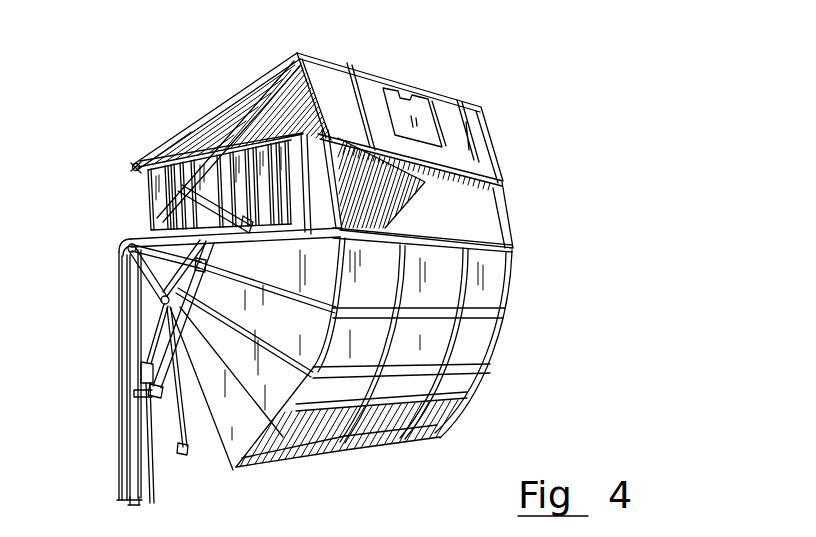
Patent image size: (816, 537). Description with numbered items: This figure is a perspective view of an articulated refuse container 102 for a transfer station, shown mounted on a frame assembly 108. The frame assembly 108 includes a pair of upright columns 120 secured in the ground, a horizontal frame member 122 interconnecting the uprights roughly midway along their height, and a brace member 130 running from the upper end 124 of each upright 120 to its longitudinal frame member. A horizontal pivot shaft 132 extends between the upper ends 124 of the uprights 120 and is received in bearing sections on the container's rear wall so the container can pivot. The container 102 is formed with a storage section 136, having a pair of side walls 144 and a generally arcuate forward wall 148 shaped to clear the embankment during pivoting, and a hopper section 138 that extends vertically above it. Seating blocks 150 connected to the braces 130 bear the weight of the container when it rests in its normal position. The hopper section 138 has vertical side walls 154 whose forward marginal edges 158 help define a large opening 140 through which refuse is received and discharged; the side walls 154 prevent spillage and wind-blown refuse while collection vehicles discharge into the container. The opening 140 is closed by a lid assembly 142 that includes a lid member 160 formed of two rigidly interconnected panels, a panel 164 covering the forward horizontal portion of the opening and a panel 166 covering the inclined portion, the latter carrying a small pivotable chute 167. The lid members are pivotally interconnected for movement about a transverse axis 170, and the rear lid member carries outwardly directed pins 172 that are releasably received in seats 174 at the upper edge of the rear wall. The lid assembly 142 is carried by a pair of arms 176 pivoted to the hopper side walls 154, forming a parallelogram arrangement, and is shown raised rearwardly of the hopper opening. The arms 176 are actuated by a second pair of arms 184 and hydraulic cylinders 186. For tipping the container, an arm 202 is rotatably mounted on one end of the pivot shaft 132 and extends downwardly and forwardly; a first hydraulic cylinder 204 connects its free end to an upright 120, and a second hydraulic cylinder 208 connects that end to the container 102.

The container 102 is at (556, 59).
The frame assembly 108 is at (115, 434).
The upright column 120 is at (137, 362).
The horizontal frame member 122 is at (130, 478).
The upper end of upright 124 is at (133, 263).
The brace member 130 is at (140, 400).
The pivot shaft 132 is at (113, 240).
The storage section 136 is at (503, 352).
The hopper section 138 is at (510, 228).
The opening 140 is at (486, 203).
The lid assembly 142 is at (490, 126).
The side wall 144 is at (237, 470).
The forward wall 148 is at (397, 415).
The seating block 150 is at (153, 463).
The hopper side wall 154 is at (305, 223).
The forward marginal edge 158 is at (330, 158).
The lid member 160 is at (348, 58).
The panel 164 is at (270, 54).
The panel 166 is at (455, 107).
The pivotable chute 167 is at (420, 105).
The transverse axis 170 is at (237, 78).
The pin 172 is at (135, 170).
The seat 174 is at (135, 170).
The arm 176 is at (263, 77).
The arm 184 is at (200, 110).
The hydraulic cylinder 186 is at (175, 202).
The arm 202 is at (133, 292).
The first hydraulic cylinder 204 is at (137, 323).
The second hydraulic cylinder 208 is at (215, 264).